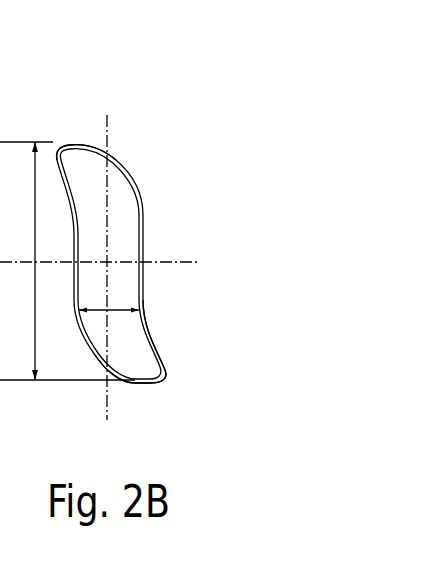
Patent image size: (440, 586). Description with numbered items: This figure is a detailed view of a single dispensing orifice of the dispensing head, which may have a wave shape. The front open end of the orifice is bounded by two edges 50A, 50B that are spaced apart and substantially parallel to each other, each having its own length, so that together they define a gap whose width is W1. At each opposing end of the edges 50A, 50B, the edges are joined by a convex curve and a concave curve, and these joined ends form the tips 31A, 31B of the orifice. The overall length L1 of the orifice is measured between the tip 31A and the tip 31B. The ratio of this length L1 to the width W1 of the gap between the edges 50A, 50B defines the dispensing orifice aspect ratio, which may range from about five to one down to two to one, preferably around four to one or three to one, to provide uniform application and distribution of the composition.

The tip 31A is at (164, 381).
The tip 31B is at (72, 144).
The edge 50A is at (143, 216).
The edge 50B is at (78, 248).
The width W1 is at (112, 313).
The length L1 is at (67, 261).